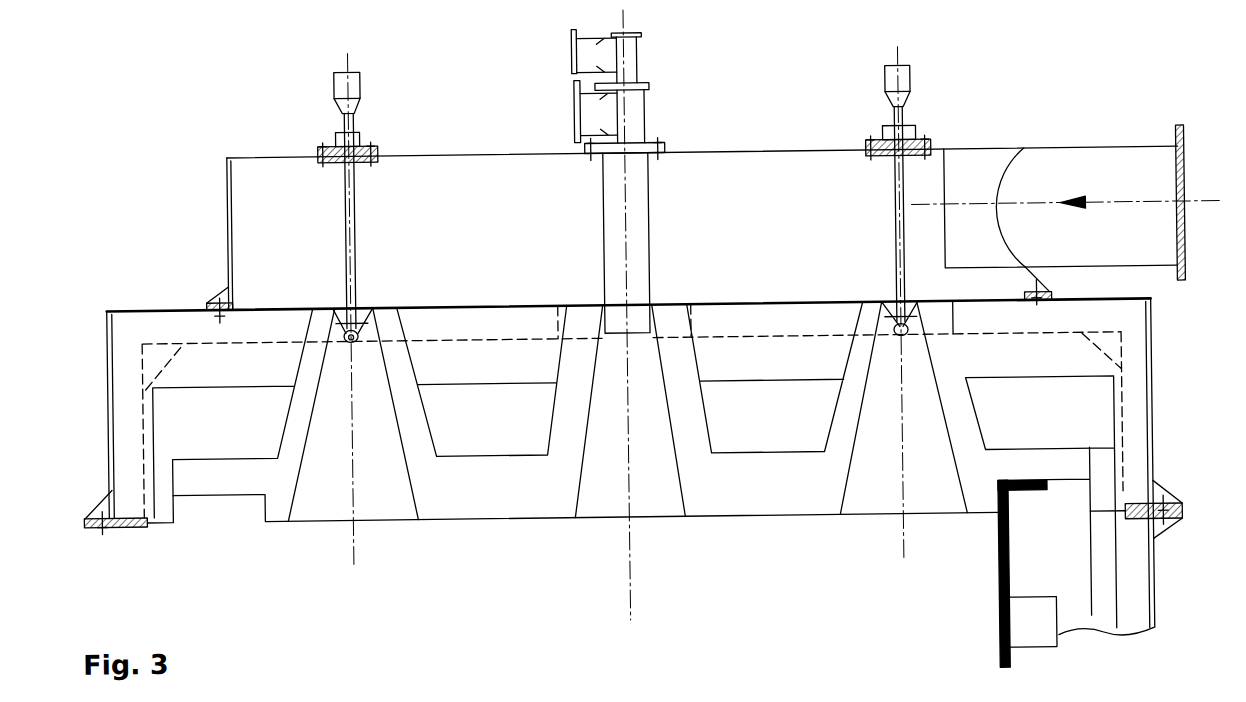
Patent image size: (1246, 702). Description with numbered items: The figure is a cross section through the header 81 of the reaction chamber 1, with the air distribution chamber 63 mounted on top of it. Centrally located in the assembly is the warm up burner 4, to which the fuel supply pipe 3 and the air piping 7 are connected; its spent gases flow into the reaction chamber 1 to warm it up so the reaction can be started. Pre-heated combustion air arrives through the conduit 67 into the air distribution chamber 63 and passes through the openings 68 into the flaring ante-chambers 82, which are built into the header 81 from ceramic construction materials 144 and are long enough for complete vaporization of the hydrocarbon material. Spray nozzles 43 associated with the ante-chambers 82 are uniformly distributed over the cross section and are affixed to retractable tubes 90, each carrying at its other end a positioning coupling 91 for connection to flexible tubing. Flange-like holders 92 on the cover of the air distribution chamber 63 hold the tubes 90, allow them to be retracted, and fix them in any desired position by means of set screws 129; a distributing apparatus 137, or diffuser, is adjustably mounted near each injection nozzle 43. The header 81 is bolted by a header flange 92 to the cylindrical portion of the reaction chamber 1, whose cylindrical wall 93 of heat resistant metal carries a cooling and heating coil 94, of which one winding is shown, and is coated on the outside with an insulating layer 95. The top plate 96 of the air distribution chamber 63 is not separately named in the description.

The reaction chamber 1 is at (698, 594).
The supply pipe 3 is at (575, 53).
The warm up burner 4 is at (636, 113).
The piping 7 is at (577, 110).
The spray nozzles 43 is at (357, 330).
The air distribution chamber 63 is at (477, 245).
The conduit 67 is at (1168, 170).
The openings 68 is at (345, 328).
The header 81 is at (1143, 337).
The ante-chambers 82 is at (380, 509).
The retractable tubes 90 is at (357, 213).
The positioning coupling 91 is at (345, 88).
The flange-like holders 92 is at (912, 144).
The cylindrical wall 93 is at (996, 582).
The cooling and heating coil 94 is at (1025, 633).
The insulating layer 95 is at (1056, 571).
The cover plate 96 is at (750, 161).
The set screws 129 is at (335, 137).
The distributing apparatus 137 is at (347, 330).
The ceramic construction materials 144 is at (470, 433).